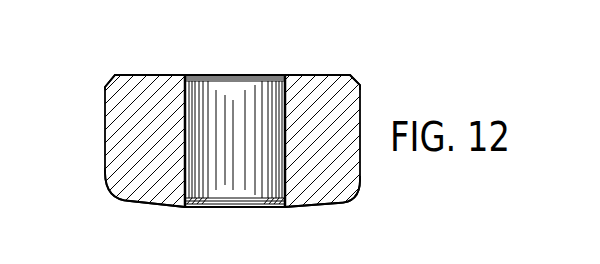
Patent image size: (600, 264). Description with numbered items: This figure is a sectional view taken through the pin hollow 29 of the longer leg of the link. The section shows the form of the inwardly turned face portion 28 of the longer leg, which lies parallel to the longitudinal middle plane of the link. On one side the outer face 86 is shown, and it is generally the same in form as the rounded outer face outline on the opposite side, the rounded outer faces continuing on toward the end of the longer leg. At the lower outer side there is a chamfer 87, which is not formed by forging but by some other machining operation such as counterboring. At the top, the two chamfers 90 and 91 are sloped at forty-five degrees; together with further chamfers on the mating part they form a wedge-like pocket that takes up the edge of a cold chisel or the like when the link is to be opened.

The inwardly turned face portion 28 is at (151, 72).
The pin hollow 29 is at (281, 117).
The chamfer 90 is at (107, 78).
The chamfer 91 is at (357, 80).
The outer face 86 is at (166, 208).
The chamfer 87 is at (285, 205).